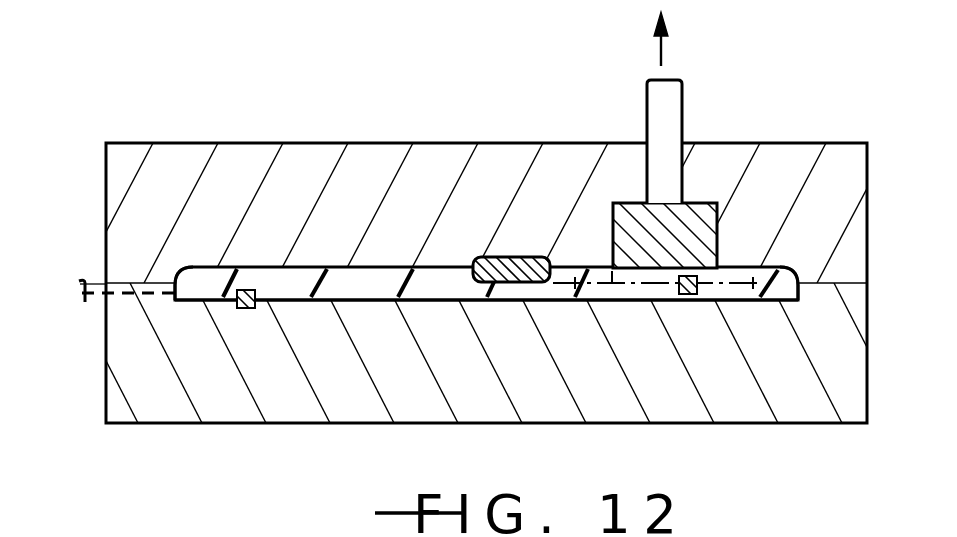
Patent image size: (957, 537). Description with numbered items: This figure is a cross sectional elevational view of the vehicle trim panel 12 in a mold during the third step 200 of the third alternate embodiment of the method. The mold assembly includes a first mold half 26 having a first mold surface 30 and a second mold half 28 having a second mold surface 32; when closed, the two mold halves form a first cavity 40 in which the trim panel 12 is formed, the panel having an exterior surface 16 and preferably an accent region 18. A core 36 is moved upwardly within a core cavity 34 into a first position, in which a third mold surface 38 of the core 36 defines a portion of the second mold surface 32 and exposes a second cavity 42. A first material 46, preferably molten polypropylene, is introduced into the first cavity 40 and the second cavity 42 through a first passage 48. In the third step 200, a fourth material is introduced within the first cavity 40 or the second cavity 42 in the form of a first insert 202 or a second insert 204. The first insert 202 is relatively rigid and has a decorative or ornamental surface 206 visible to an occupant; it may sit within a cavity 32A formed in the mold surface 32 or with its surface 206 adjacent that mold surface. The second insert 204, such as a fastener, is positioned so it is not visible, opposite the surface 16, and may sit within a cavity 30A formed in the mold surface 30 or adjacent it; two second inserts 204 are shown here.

The third step of the third alternate embodiment of the method 200 is at (153, 63).
The second mold half 28 is at (152, 160).
The first mold half 26 is at (213, 404).
The trim panel 12 is at (197, 287).
The exterior surface 16 is at (213, 266).
The second mold surface 32 is at (262, 268).
The first cavity 40 is at (497, 300).
The first mold surface 30 is at (425, 305).
The cavity formed in the mold surface 30A is at (207, 300).
The first material 46 is at (790, 302).
The first passage 48 is at (98, 303).
The decorative or ornamental surface 206 is at (488, 257).
The first insert 202 is at (505, 257).
The cavity formed in the mold surface 32A is at (540, 262).
The third mold surface 38 is at (600, 282).
The accent region 18 is at (650, 294).
The second cavity 42 is at (652, 303).
The second insert 204 is at (251, 308).
The core cavity 34 is at (712, 240).
The core 36 is at (705, 203).